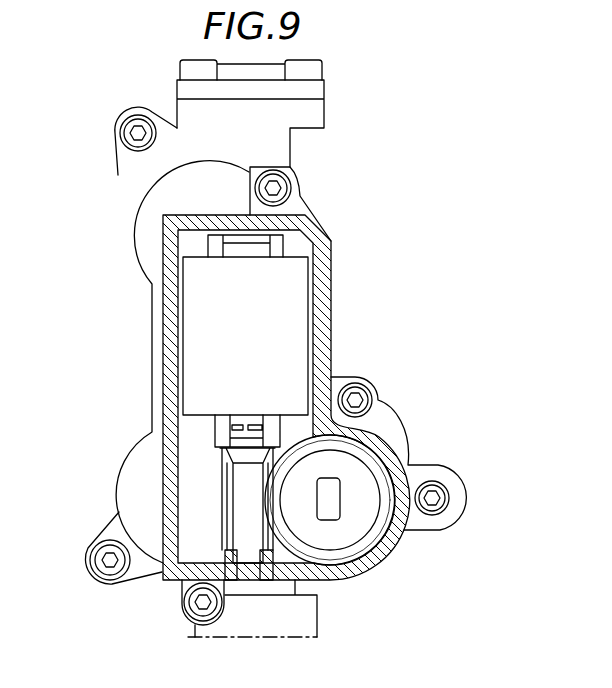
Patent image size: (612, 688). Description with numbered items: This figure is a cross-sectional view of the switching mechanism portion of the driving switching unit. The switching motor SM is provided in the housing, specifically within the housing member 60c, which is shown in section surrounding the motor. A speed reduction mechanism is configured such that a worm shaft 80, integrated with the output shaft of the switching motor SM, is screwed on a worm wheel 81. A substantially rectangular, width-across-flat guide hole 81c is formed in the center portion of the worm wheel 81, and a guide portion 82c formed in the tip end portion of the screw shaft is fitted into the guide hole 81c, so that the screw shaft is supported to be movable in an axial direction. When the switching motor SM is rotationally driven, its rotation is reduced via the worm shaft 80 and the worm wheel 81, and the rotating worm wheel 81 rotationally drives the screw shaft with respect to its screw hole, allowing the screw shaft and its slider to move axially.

The member of the housing 60c is at (170, 315).
The switching motor SM is at (294, 282).
The worm shaft 80 is at (235, 533).
The worm wheel 81 is at (353, 468).
The guide hole 81c is at (342, 503).
The guide portion 82c is at (331, 521).